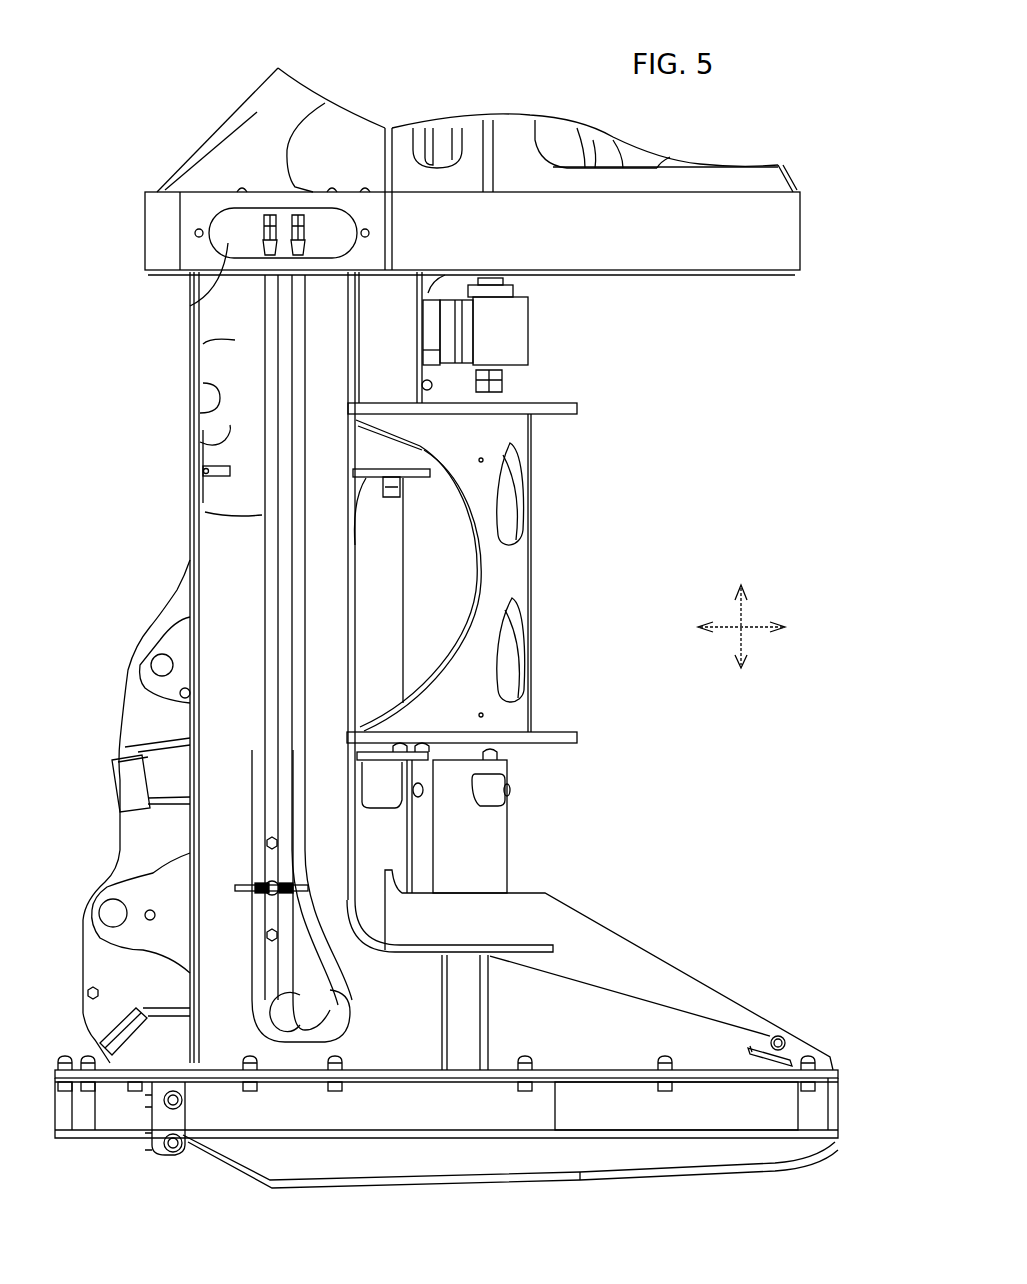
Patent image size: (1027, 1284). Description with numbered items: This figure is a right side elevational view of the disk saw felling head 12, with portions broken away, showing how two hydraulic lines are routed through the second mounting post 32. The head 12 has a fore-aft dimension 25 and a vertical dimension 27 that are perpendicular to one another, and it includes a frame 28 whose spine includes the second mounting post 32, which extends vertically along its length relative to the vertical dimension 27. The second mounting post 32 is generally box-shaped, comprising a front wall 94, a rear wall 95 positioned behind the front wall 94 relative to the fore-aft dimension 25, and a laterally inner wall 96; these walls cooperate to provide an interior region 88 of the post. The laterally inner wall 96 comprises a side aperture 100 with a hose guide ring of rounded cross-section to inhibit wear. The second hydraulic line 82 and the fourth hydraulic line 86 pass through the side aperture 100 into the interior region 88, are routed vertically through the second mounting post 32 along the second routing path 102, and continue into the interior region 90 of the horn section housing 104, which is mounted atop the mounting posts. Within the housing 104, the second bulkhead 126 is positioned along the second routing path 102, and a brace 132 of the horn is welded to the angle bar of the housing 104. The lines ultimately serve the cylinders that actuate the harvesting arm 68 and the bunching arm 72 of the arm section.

The head 12 is at (175, 74).
The fore-aft dimension 25 is at (758, 623).
The vertical dimension 27 is at (758, 638).
The frame 28 is at (98, 690).
The second mounting post 32 is at (180, 470).
The harvesting arm 68 is at (531, 592).
The bunching arm 72 is at (527, 317).
The second hydraulic line 82 is at (303, 656).
The fourth hydraulic line 86 is at (262, 612).
The interior region of mounting post 88 is at (200, 442).
The interior region of horn section 90 is at (192, 303).
The front wall 94 is at (356, 530).
The rear wall 95 is at (200, 413).
The laterally inner wall 96 is at (203, 344).
The side aperture 100 is at (347, 1005).
The second routing path 102 is at (205, 512).
The housing 104 is at (160, 245).
The second bulkhead 126 is at (232, 223).
The brace 132 is at (258, 127).